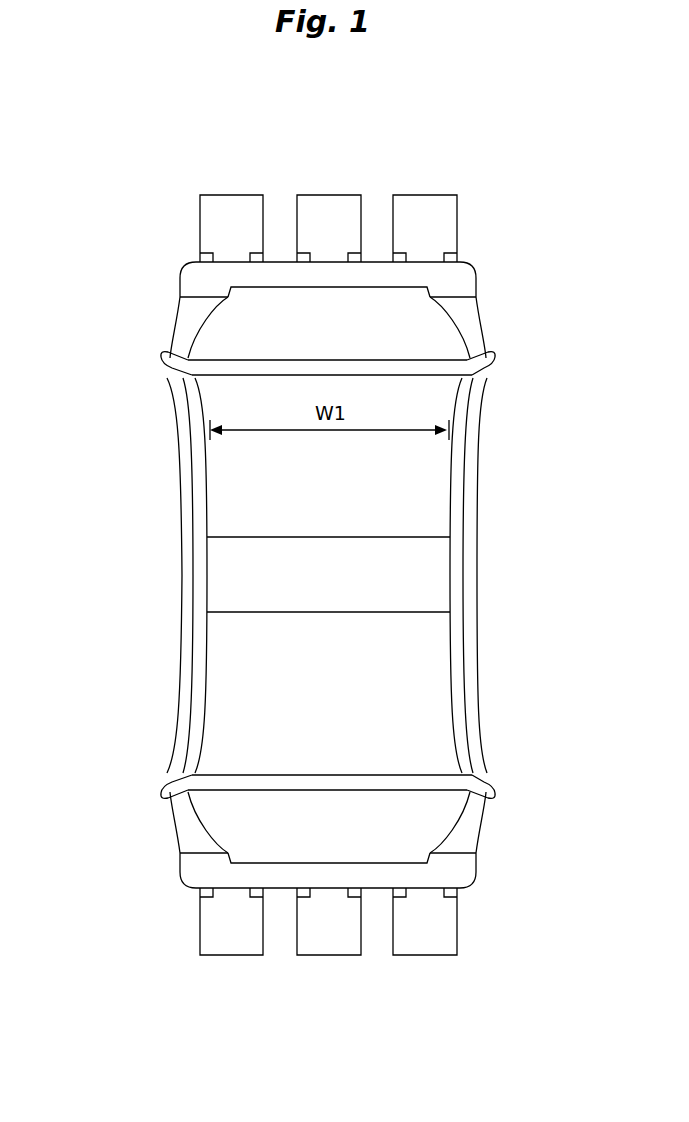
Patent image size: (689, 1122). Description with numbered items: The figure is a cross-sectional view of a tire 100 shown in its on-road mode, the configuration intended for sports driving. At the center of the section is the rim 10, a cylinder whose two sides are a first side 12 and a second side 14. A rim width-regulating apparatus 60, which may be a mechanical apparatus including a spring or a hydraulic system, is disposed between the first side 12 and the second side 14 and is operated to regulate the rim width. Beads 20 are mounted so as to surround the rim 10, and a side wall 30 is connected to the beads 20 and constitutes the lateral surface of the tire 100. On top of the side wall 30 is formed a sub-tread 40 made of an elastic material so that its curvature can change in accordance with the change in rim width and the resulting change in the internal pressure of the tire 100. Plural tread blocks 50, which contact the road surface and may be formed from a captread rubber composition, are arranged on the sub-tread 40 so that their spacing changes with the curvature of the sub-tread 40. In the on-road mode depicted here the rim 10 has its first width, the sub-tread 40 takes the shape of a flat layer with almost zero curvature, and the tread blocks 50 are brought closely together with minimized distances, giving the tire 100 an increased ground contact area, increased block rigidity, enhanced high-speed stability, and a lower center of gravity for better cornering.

The tire 100 is at (226, 101).
The rim 10 is at (321, 575).
The first side 12 is at (190, 565).
The second side 14 is at (470, 565).
The bead 20 is at (495, 354).
The side wall 30 is at (470, 315).
The sub-tread 40 is at (476, 277).
The tread blocks 50 is at (344, 184).
The rim width-regulating apparatus 60 is at (330, 592).